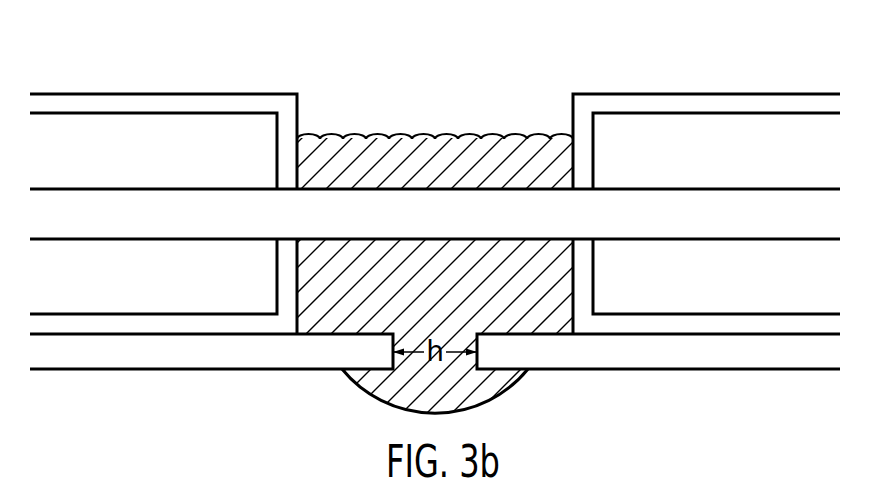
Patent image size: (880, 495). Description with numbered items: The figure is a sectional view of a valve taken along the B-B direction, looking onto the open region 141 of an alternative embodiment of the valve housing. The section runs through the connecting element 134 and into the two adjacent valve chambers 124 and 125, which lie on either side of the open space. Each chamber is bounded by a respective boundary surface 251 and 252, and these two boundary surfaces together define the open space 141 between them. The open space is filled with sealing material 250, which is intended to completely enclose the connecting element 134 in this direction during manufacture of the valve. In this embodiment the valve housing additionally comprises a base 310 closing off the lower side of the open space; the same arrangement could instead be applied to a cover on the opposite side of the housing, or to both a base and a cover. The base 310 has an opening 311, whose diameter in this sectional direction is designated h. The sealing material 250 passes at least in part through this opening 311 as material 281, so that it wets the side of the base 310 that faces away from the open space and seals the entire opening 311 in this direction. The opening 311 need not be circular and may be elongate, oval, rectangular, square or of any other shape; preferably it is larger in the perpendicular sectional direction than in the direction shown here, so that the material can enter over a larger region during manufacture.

The valve chamber 124 is at (148, 297).
The valve chamber 125 is at (713, 296).
The connecting element 134 is at (667, 208).
The open space 141 is at (481, 86).
The sealing material 250 is at (377, 151).
The boundary surface 251 is at (300, 104).
The boundary surface 252 is at (569, 104).
The material 281 is at (407, 397).
The base 310 is at (237, 364).
The opening 311 is at (453, 362).